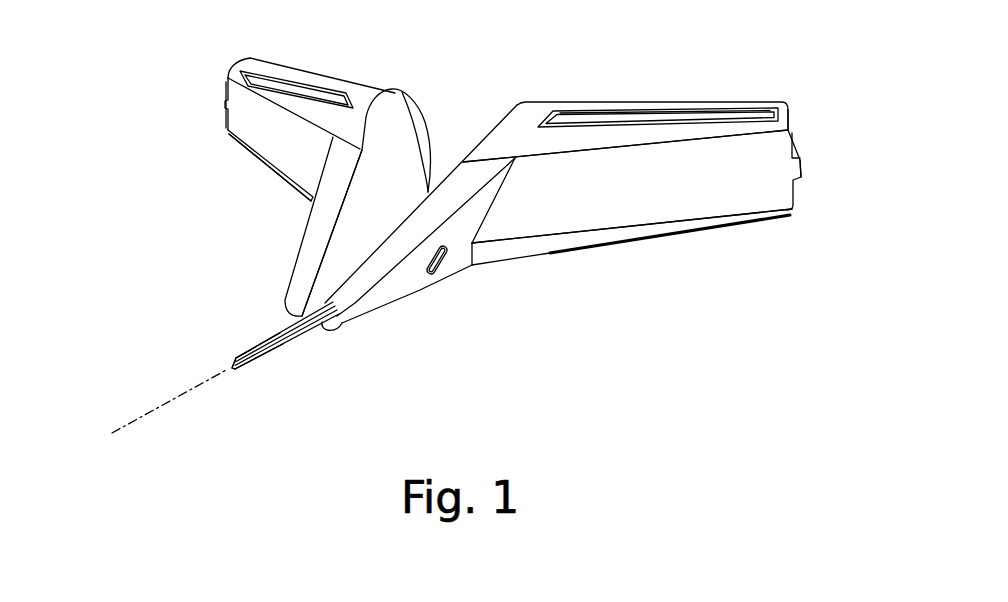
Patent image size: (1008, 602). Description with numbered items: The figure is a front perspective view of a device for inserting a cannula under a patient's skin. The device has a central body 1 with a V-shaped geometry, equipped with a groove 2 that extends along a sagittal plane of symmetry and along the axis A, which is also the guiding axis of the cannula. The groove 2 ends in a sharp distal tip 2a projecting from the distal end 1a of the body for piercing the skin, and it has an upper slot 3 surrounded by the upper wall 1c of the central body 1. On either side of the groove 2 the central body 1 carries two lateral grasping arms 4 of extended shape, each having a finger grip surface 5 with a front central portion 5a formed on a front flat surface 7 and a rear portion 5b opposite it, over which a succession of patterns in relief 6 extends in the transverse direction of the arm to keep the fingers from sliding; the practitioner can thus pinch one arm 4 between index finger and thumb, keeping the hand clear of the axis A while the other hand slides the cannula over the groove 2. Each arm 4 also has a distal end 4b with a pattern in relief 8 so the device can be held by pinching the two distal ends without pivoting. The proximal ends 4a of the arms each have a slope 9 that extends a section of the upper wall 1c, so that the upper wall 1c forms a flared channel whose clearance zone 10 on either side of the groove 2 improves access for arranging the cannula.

The central body 1 is at (398, 284).
The distal end 1a is at (332, 328).
The upper wall 1c is at (337, 245).
The groove 2 is at (240, 370).
The sharp distal tip 2a is at (288, 394).
The upper slot 3 is at (250, 350).
The lateral grasping arm 4 is at (293, 100).
The proximal end 4a is at (392, 113).
The distal end 4b is at (227, 106).
The finger grip surface 5 is at (509, 64).
The front central portion 5a is at (238, 132).
The rear portion 5b is at (509, 63).
The pattern in relief 6 is at (700, 112).
The front flat surface 7 is at (470, 215).
The pattern in relief 8 is at (865, 210).
The slope 9 is at (436, 101).
The clearance zone 10 is at (456, 122).
The axis A is at (130, 423).